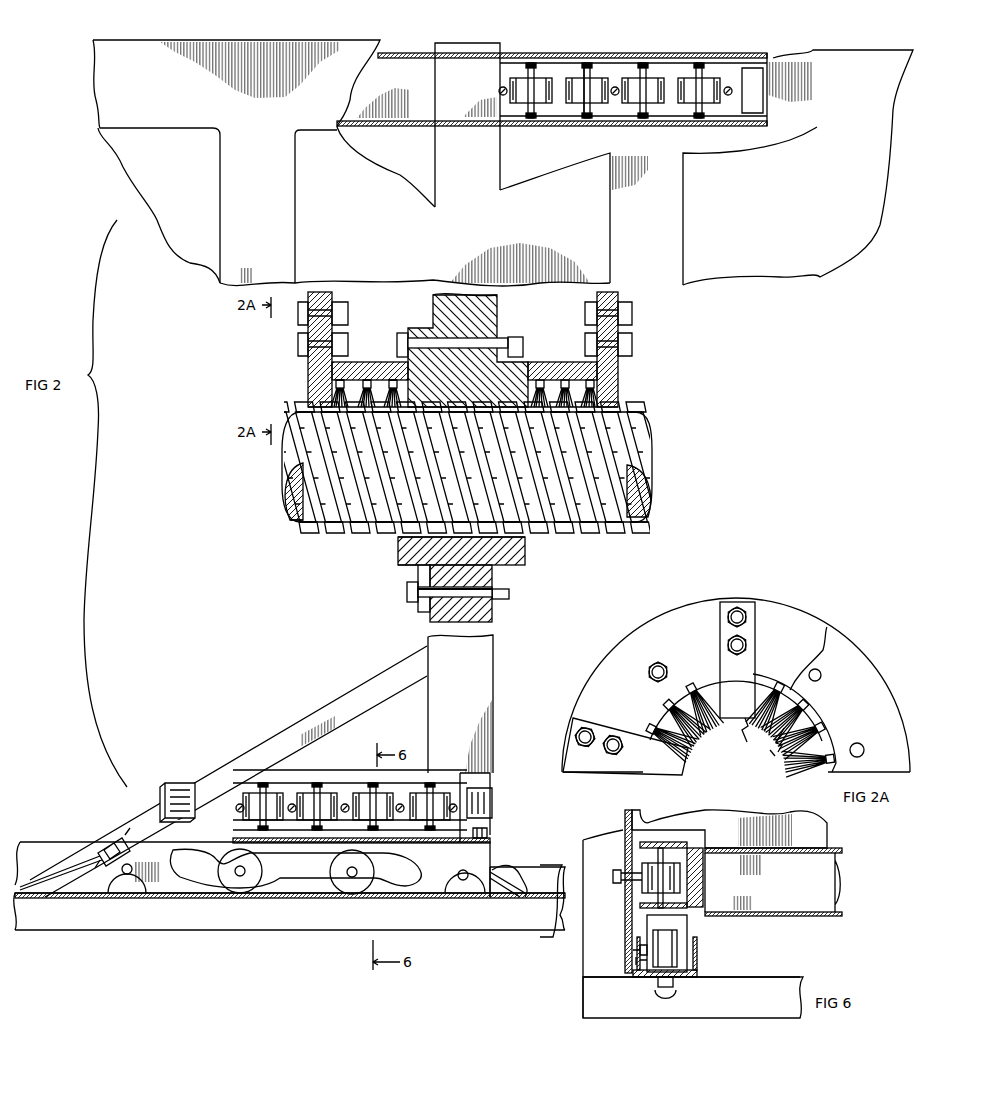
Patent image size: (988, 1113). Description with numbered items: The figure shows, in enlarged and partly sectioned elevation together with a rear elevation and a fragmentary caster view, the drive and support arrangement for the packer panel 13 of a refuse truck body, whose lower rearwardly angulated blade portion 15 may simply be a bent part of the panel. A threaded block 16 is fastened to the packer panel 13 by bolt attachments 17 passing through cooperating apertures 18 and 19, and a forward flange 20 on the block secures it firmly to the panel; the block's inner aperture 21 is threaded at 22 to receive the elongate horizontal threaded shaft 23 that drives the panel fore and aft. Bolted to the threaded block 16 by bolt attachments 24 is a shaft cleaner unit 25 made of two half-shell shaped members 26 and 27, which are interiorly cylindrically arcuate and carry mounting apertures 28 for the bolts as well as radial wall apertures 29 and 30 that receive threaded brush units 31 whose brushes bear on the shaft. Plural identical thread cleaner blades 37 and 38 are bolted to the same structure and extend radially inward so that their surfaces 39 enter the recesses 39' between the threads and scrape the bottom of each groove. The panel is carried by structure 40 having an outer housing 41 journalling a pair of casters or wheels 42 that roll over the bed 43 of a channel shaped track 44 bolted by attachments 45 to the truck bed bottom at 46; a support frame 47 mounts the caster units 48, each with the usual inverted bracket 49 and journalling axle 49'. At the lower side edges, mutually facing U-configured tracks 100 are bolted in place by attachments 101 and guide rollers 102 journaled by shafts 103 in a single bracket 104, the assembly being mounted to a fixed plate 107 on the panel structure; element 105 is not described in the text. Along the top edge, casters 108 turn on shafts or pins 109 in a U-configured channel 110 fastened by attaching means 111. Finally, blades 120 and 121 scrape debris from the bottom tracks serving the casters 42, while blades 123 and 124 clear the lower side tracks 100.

In FIG. 2, the packer panel 13 is at (492, 608).
In FIG. 2, the blade portion 15 is at (282, 742).
In FIG. 2, the threaded block 16 is at (525, 548).
In FIG. 2, the bolt attachments 17 is at (407, 595).
In FIG. 2, the aperture 18 is at (415, 600).
In FIG. 2, the aperture 19 is at (495, 590).
In FIG. 2, the forward flange 20 is at (420, 575).
In FIG. 2, the inner aperture 21 is at (405, 540).
In FIG. 2, the threads 22 is at (412, 560).
In FIG. 2, the threaded shaft 23 is at (300, 474).
In FIG. 2, the bolt attachments 24 is at (297, 312).
In FIG. 2, the shaft cleaner unit 25 is at (385, 360).
In FIG. 2, the half-shell shaped member 26 is at (543, 378).
In FIG. 2, the half-shell shaped member 27 is at (345, 378).
In FIG. 2, the mounting apertures 28 is at (598, 300).
In FIG. 2, the radial wall aperture 29 is at (505, 345).
In FIG. 2, the radial wall aperture 30 is at (367, 380).
In FIG. 2, the threaded brush unit 31 is at (625, 402).
In FIG. 2A, the threaded brush unit 31 is at (790, 747).
In FIG. 2, the thread cleaner blade 37 is at (619, 396).
In FIG. 2, the thread cleaner blade 38 is at (306, 393).
In FIG. 2A, the thread cleaner blade 38 is at (677, 775).
In FIG. 2, the blade surface 39 is at (302, 536).
In FIG. 2A, the blade surface 39 is at (751, 737).
In FIG. 2, the recesses between threads 39' is at (311, 515).
In FIG. 2, the carrying structure 40 is at (428, 897).
In FIG. 2, the outer housing 41 is at (490, 900).
In FIG. 2, the casters 42 is at (350, 897).
In FIG. 2, the bed 43 is at (270, 900).
In FIG. 6, the bed 43 is at (583, 1012).
In FIG. 6, the channel shaped track 44 is at (700, 962).
In FIG. 6, the attachments 45 is at (700, 988).
In FIG. 6, the truck bed bottom 46 is at (797, 975).
In FIG. 2, the support frame 47 is at (489, 834).
In FIG. 6, the support frame 47 is at (790, 913).
In FIG. 6, the caster units 48 is at (687, 920).
In FIG. 6, the inverted bracket 49 is at (597, 960).
In FIG. 6, the journalling axle 49' is at (599, 976).
In FIG. 6, the U-configured tracks 100 is at (623, 850).
In FIG. 6, the attachments 101 is at (623, 917).
In FIG. 6, the rollers 102 is at (648, 822).
In FIG. 6, the shafts 103 is at (660, 870).
In FIG. 6, the bracket 104 is at (700, 850).
In FIG. 6, the rail body 105 is at (765, 870).
In FIG. 6, the fixed plate 107 is at (760, 847).
In FIG. 2, the casters 108 is at (572, 85).
In FIG. 2, the shafts or pins 109 is at (595, 65).
In FIG. 2, the U-configured channel 110 is at (672, 66).
In FIG. 2, the attaching means 111 is at (731, 87).
In FIG. 2, the blade 120 is at (40, 862).
In FIG. 2, the blade 121 is at (500, 880).
In FIG. 2, the blade 123 is at (170, 783).
In FIG. 2, the blade 124 is at (493, 792).